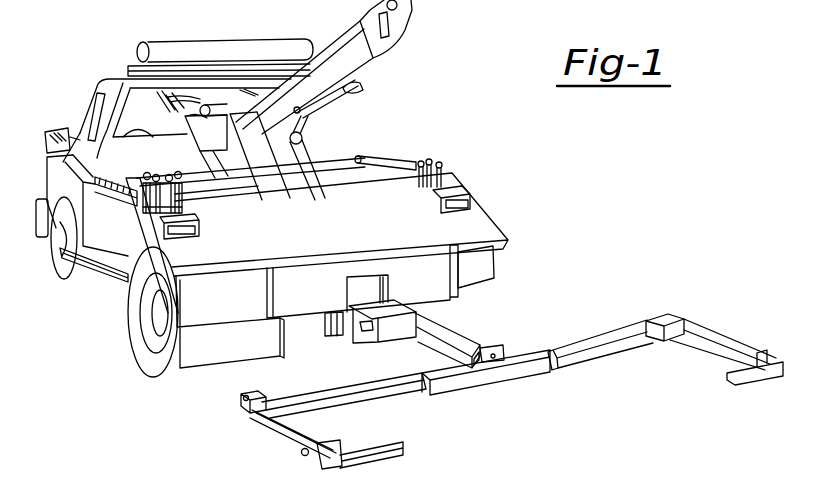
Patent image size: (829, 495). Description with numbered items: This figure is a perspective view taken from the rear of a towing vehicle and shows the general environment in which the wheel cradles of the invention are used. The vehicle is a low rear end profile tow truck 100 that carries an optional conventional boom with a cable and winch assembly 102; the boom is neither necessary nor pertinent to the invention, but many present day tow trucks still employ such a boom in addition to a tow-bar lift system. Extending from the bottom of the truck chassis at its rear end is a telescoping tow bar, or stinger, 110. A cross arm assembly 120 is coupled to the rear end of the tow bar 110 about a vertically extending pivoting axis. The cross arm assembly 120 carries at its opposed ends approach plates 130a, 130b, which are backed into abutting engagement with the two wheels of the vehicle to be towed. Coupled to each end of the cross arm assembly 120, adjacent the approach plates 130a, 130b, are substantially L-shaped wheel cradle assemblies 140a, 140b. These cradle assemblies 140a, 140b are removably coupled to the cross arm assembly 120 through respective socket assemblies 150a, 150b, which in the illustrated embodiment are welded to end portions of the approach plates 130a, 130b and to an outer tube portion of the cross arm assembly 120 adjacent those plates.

The tow truck 100 is at (284, 188).
The boom with cable and winch assembly 102 is at (327, 45).
The tow bar 110 is at (494, 354).
The cross arm assembly 120 is at (484, 385).
The approach plate 130a is at (302, 412).
The approach plate 130b is at (603, 346).
The wheel cradle assembly 140a is at (337, 446).
The wheel cradle assembly 140b is at (734, 362).
The socket assembly 150a is at (234, 410).
The socket assembly 150b is at (682, 308).